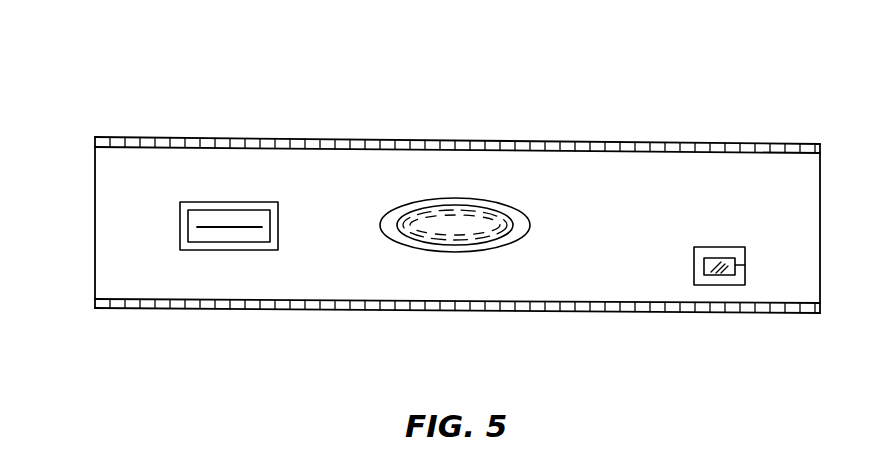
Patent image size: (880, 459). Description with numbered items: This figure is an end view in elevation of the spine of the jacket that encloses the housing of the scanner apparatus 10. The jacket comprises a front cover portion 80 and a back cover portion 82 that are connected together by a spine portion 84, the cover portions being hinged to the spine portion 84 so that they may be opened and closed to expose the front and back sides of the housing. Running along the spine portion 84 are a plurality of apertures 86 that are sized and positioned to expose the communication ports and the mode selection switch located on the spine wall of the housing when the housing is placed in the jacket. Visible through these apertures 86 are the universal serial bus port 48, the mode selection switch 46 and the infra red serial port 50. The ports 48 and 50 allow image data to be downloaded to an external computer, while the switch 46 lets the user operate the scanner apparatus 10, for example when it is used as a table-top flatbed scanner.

The scanner apparatus 10 is at (173, 55).
The front cover portion 80 is at (636, 142).
The back cover portion 82 is at (616, 312).
The spine portion 84 is at (95, 222).
The universal serial bus (USB) port 48 is at (278, 217).
The mode selection switch 46 is at (513, 223).
The infra red (IR) serial port 50 is at (745, 265).
The apertures 86 is at (400, 243).